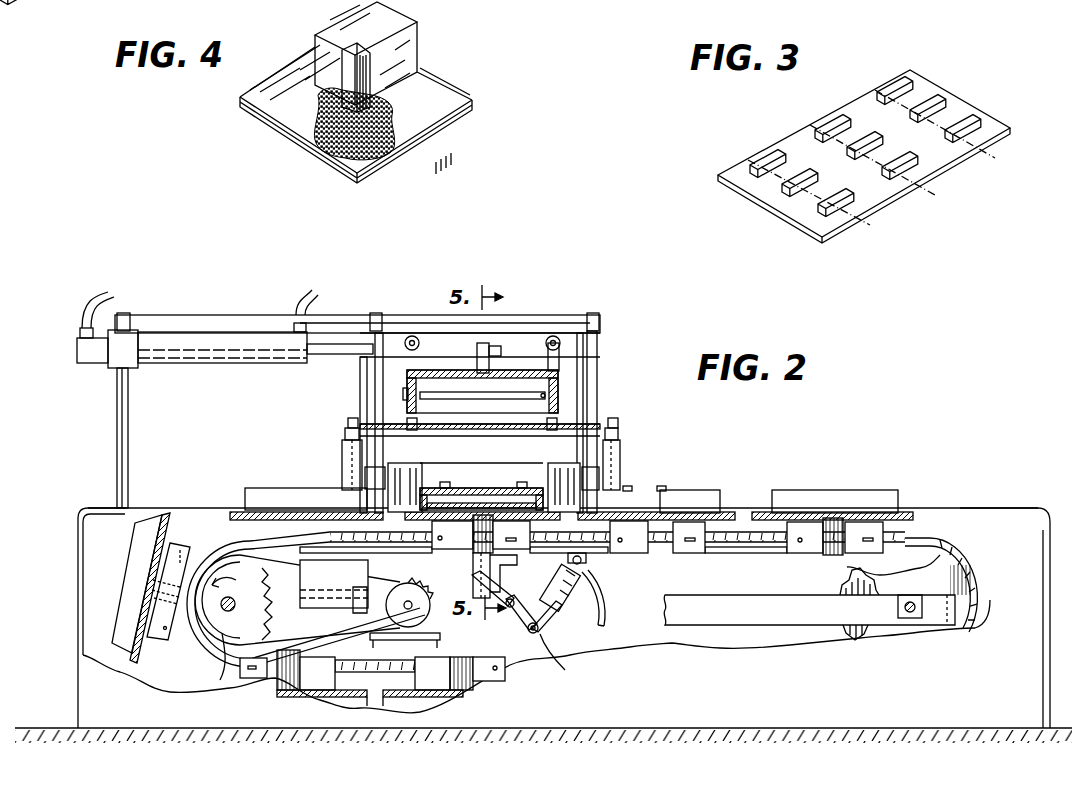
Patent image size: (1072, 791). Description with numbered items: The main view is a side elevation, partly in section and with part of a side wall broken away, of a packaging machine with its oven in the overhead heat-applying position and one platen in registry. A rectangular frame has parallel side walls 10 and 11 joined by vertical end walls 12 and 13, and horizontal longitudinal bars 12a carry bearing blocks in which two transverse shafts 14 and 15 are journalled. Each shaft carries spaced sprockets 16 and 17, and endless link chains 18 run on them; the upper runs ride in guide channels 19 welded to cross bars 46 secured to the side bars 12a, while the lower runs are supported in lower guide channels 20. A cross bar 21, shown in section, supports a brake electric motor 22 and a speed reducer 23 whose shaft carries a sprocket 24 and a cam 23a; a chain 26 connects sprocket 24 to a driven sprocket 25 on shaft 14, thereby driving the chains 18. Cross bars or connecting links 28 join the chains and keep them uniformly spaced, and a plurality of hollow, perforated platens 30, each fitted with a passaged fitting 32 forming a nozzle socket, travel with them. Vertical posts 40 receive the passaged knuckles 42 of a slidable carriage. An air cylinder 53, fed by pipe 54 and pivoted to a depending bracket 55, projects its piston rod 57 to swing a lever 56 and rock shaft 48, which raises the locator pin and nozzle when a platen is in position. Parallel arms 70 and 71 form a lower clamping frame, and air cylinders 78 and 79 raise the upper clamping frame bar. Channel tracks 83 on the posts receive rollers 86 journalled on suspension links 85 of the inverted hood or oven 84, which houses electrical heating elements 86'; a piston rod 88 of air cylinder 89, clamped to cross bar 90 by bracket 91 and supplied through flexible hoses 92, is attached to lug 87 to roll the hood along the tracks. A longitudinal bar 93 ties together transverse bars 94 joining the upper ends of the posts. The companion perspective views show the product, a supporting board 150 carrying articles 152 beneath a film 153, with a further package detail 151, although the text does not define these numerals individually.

In FIG. 2, the side wall 10 is at (668, 686).
In FIG. 2, the side wall 11 is at (100, 558).
In FIG. 2, the end wall 12 is at (80, 620).
In FIG. 2, the longitudinal bar 12a is at (805, 625).
In FIG. 2, the end wall 13 is at (1047, 508).
In FIG. 2, the transverse shaft 14 is at (236, 612).
In FIG. 2, the transverse shaft 15 is at (923, 607).
In FIG. 2, the sprocket 16 is at (340, 582).
In FIG. 2, the sprocket 17 is at (883, 583).
In FIG. 2, the endless link chain 18 is at (183, 660).
In FIG. 2, the upper guide channel 19 is at (302, 512).
In FIG. 2, the lower guide channel 20 is at (415, 670).
In FIG. 2, the cross bar 21 is at (440, 648).
In FIG. 2, the brake electric motor 22 is at (360, 585).
In FIG. 2, the speed reducer 23 is at (432, 590).
In FIG. 2, the cam 23a is at (410, 585).
In FIG. 2, the sprocket 24 is at (338, 645).
In FIG. 2, the driven sprocket 25 is at (220, 680).
In FIG. 2, the endless link chain 26 is at (263, 668).
In FIG. 2, the connecting link 28 is at (688, 542).
In FIG. 2, the hollow platen 30 is at (258, 488).
In FIG. 2, the passaged fitting 32 is at (445, 535).
In FIG. 2, the vertical post 40 is at (375, 398).
In FIG. 2, the passaged knuckle 42 is at (365, 480).
In FIG. 2, the cross bar 46 is at (505, 565).
In FIG. 2, the shaft 48 is at (528, 632).
In FIG. 2, the air cylinder 53 is at (572, 612).
In FIG. 2, the pipe 54 is at (603, 608).
In FIG. 2, the depending bracket 55 is at (585, 560).
In FIG. 2, the lever 56 is at (515, 610).
In FIG. 2, the piston rod 57 is at (565, 656).
In FIG. 2, the arm 70 is at (405, 476).
In FIG. 2, the arm 71 is at (564, 476).
In FIG. 2, the air cylinder 78 is at (340, 450).
In FIG. 2, the air cylinder 79 is at (622, 460).
In FIG. 2, the guide track 83 is at (340, 333).
In FIG. 2, the hood 84 is at (560, 376).
In FIG. 2, the suspension link 85 is at (560, 352).
In FIG. 2, the roller 86 is at (420, 312).
In FIG. 2, the electrical heating element 86' is at (526, 398).
In FIG. 2, the apertured lug 87 is at (485, 343).
In FIG. 2, the piston rod 88 is at (332, 354).
In FIG. 2, the air cylinder 89 is at (202, 363).
In FIG. 2, the cross bar 90 is at (126, 313).
In FIG. 2, the clamping bracket 91 is at (110, 368).
In FIG. 2, the flexible air hose 92 is at (92, 296).
In FIG. 2, the longitudinal bar 93 is at (198, 315).
In FIG. 2, the transverse connecting bar 94 is at (383, 313).
In FIG. 4, the plate 150 is at (427, 133).
In FIG. 3, the plate 150 is at (923, 178).
In FIG. 2, the plate 150 is at (490, 488).
In FIG. 4, the fillet 151 is at (332, 157).
In FIG. 4, the terminal pin 152 is at (340, 47).
In FIG. 3, the terminal pin 152 is at (775, 157).
In FIG. 2, the terminal pin 152 is at (452, 482).
In FIG. 4, the block 153 is at (430, 88).
In FIG. 3, the block 153 is at (993, 122).